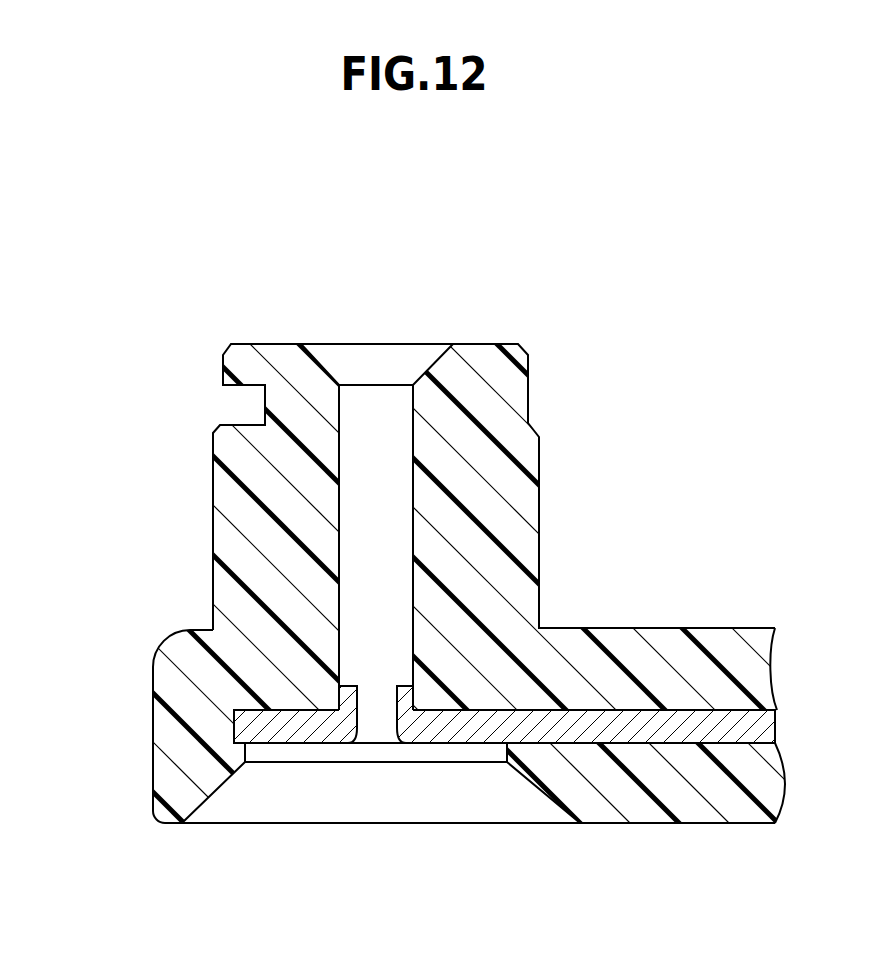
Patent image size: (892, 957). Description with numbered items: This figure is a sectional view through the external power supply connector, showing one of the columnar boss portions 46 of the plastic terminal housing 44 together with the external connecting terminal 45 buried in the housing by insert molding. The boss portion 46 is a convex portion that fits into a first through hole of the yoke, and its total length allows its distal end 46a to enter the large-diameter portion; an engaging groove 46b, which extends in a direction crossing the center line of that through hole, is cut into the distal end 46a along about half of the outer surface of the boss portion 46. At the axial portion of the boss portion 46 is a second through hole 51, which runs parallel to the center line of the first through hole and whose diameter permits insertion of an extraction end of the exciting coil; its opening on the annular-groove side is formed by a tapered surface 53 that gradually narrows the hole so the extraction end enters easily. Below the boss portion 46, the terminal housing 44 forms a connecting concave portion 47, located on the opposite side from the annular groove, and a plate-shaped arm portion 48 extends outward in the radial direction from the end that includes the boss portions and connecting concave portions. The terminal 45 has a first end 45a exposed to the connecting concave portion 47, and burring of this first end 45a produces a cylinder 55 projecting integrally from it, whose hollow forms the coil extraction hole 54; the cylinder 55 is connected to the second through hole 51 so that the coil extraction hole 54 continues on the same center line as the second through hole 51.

The terminal housing 44 is at (153, 773).
The external connecting terminal 45 is at (642, 734).
The first end 45a is at (268, 742).
The boss portion 46 is at (212, 474).
The distal end 46a is at (529, 388).
The engaging groove 46b is at (262, 400).
The connecting concave portion 47 is at (522, 780).
The arm portion 48 is at (712, 813).
The second through hole 51 is at (340, 543).
The tapered surface 53 is at (440, 362).
The coil extraction hole 54 is at (358, 703).
The cylinder 55 is at (345, 700).